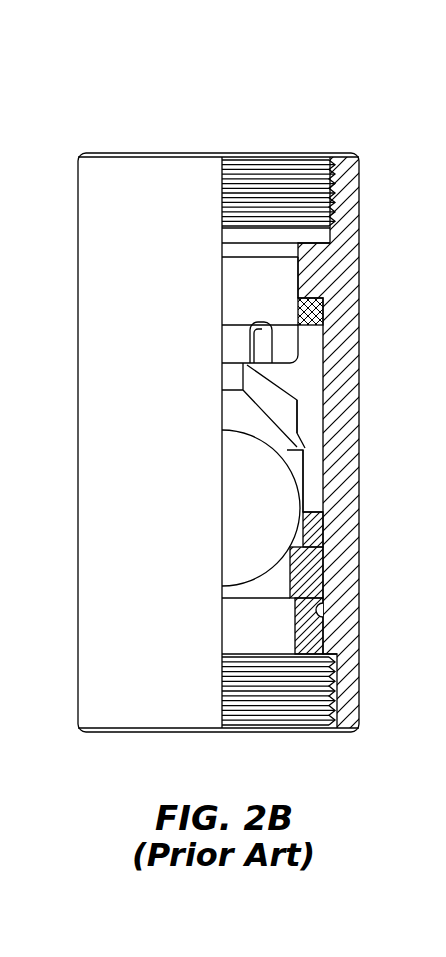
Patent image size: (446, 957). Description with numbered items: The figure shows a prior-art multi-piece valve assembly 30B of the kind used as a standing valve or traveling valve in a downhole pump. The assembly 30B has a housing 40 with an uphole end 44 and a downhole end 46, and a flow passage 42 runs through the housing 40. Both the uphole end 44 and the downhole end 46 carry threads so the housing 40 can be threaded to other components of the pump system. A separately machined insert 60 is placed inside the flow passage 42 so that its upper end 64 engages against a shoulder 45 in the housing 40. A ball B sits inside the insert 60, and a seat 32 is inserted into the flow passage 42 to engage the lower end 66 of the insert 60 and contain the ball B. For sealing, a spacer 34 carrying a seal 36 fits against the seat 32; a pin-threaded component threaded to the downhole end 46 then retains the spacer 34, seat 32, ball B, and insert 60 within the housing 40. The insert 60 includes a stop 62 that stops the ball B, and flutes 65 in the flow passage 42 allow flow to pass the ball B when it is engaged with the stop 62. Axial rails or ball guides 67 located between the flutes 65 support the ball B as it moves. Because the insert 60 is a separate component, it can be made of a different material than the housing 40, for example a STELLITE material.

The multi-piece valve assembly 30B is at (150, 90).
The housing 40 is at (77, 430).
The uphole end 44 is at (333, 175).
The downhole end 46 is at (333, 698).
The flow passage 42 is at (262, 266).
The shoulder 45 is at (297, 272).
The upper end 64 is at (322, 296).
The stop 62 is at (233, 392).
The insert 60 is at (303, 435).
The flutes 65 is at (313, 460).
The axial rails or ball guides 67 is at (303, 474).
The ball B is at (288, 498).
The lower end 66 is at (315, 548).
The seat 32 is at (315, 572).
The seal 36 is at (322, 610).
The spacer 34 is at (318, 632).